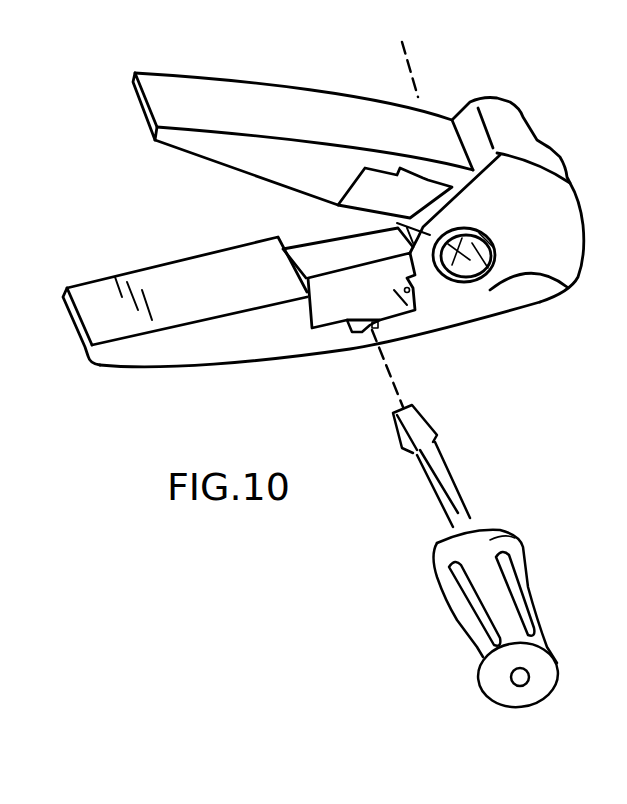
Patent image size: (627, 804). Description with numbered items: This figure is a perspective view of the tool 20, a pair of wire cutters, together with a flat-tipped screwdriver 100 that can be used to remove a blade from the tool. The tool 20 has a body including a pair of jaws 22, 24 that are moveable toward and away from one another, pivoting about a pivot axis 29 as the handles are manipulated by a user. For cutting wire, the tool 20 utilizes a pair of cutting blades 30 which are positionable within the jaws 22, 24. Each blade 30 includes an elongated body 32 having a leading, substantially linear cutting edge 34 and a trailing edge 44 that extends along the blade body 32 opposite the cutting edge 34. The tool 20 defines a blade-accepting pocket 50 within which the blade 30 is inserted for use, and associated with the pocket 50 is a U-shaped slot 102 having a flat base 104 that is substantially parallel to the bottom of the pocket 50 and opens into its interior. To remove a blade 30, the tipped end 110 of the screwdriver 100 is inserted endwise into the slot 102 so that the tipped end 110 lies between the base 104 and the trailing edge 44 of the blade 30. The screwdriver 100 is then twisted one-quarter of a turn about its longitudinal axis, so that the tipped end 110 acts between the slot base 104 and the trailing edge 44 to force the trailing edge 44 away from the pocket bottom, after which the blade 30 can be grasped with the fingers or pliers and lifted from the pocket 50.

The tool 20 is at (512, 94).
The jaw 22 is at (303, 107).
The jaw 24 is at (180, 292).
The pivot axis 29 is at (565, 283).
The cutting blade 30 is at (417, 187).
The blade body 32 is at (300, 318).
The cutting edge 34 is at (347, 262).
The trailing edge 44 is at (342, 330).
The blade-accepting pocket 50 is at (405, 297).
The flat-tipped screwdriver 100 is at (487, 545).
The slot 102 is at (348, 328).
The base 104 is at (400, 343).
The tipped end 110 is at (423, 420).